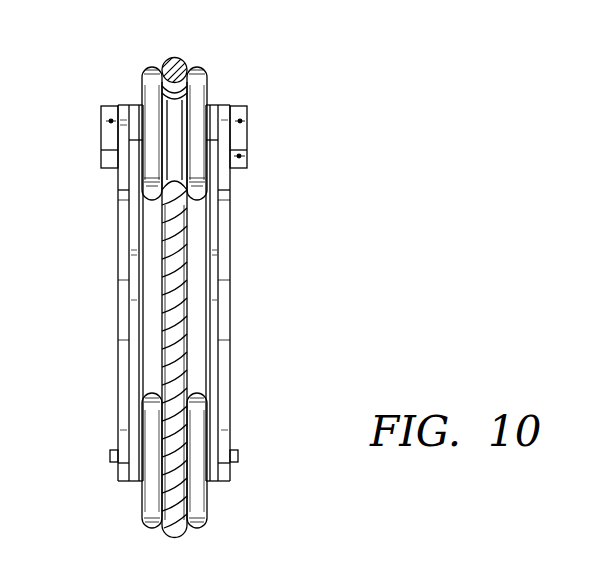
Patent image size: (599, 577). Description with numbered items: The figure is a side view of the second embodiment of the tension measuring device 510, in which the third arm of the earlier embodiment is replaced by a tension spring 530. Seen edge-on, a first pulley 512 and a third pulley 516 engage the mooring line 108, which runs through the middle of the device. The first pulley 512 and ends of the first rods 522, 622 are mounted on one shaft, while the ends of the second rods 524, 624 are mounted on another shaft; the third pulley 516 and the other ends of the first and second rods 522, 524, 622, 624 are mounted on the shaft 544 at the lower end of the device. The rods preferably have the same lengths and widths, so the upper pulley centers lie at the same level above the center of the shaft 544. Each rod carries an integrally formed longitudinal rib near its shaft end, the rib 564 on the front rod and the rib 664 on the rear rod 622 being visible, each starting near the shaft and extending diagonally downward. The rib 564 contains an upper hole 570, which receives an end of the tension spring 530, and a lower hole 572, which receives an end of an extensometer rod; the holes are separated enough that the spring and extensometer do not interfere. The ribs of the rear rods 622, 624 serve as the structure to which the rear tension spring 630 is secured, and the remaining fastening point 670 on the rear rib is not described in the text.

The mooring line 108 is at (178, 58).
The tension measuring device 510 is at (368, 34).
The first pulley 512 is at (150, 67).
The third pulley 516 is at (207, 506).
The first rod 522 is at (214, 233).
The second rod 524 is at (230, 278).
The tension spring 530 is at (242, 120).
The shaft 544 is at (109, 452).
The rib 564 is at (239, 116).
The upper hole 570 is at (243, 123).
The lower hole 572 is at (241, 156).
The first rod 622 is at (138, 230).
The second rod 624 is at (125, 277).
The tension spring 630 is at (111, 119).
The rib 664 is at (110, 114).
The fastener 670 is at (111, 124).